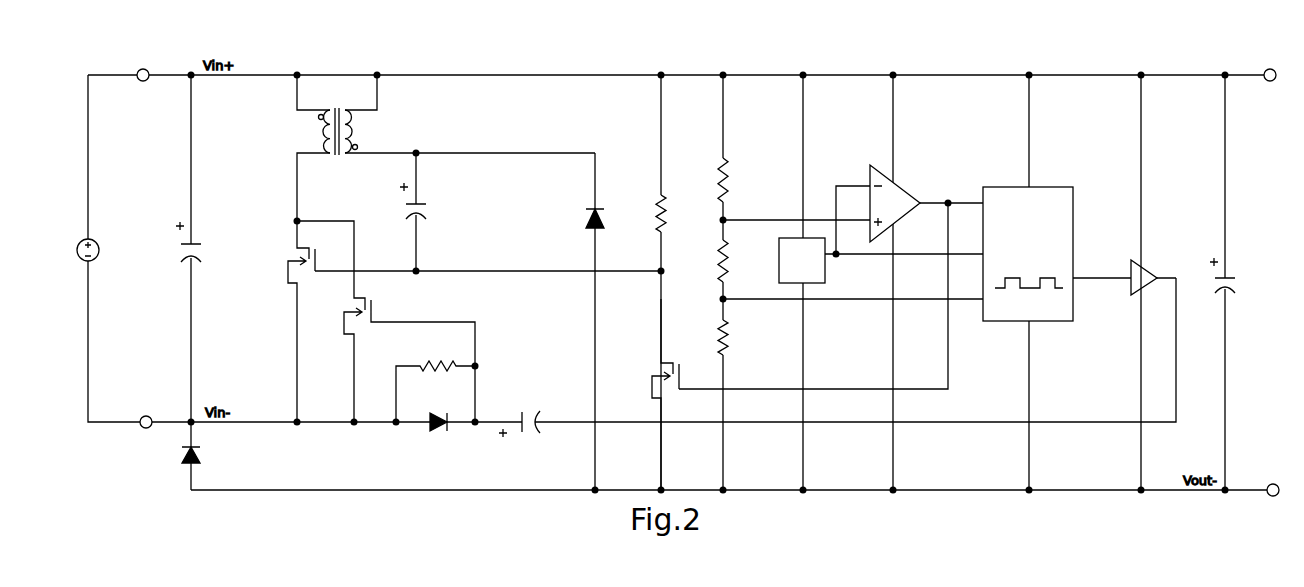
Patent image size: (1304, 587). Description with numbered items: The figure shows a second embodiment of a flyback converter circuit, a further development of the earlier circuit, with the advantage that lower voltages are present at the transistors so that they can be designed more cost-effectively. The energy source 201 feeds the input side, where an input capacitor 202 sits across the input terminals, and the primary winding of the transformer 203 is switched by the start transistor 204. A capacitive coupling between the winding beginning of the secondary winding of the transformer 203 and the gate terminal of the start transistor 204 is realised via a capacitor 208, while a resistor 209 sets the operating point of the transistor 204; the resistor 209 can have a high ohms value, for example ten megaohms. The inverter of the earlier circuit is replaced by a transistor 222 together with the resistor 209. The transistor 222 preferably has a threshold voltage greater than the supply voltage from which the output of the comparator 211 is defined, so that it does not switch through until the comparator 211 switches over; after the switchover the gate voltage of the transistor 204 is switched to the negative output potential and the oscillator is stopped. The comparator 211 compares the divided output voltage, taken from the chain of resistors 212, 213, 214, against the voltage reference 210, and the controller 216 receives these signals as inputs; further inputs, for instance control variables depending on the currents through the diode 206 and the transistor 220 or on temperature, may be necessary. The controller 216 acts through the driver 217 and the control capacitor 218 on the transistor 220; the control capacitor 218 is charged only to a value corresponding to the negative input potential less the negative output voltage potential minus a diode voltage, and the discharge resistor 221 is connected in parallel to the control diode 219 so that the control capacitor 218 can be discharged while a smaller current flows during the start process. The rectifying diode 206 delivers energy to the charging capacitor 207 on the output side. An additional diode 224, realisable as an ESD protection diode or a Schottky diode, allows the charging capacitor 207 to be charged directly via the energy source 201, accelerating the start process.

The energy source 201 is at (99, 260).
The input capacitor 202 is at (202, 248).
The transformer 203 is at (343, 140).
The start transistor 204 is at (308, 321).
The diode 206 is at (604, 321).
The charging capacitor 207 is at (1235, 282).
The capacitor 208 is at (425, 212).
The resistor 209 is at (674, 222).
The voltage reference 210 is at (881, 243).
The comparator 211 is at (926, 203).
The divider resistor 212 is at (736, 187).
The divider resistor 213 is at (736, 268).
The divider resistor 214 is at (737, 345).
The controller 216 is at (1030, 263).
The driver 217 is at (1152, 283).
The control capacitor 218 is at (534, 431).
The control diode 219 is at (451, 432).
The transistor 220 is at (386, 321).
The discharge resistor 221 is at (435, 391).
The transistor 222 is at (672, 394).
The additional diode 224 is at (203, 456).